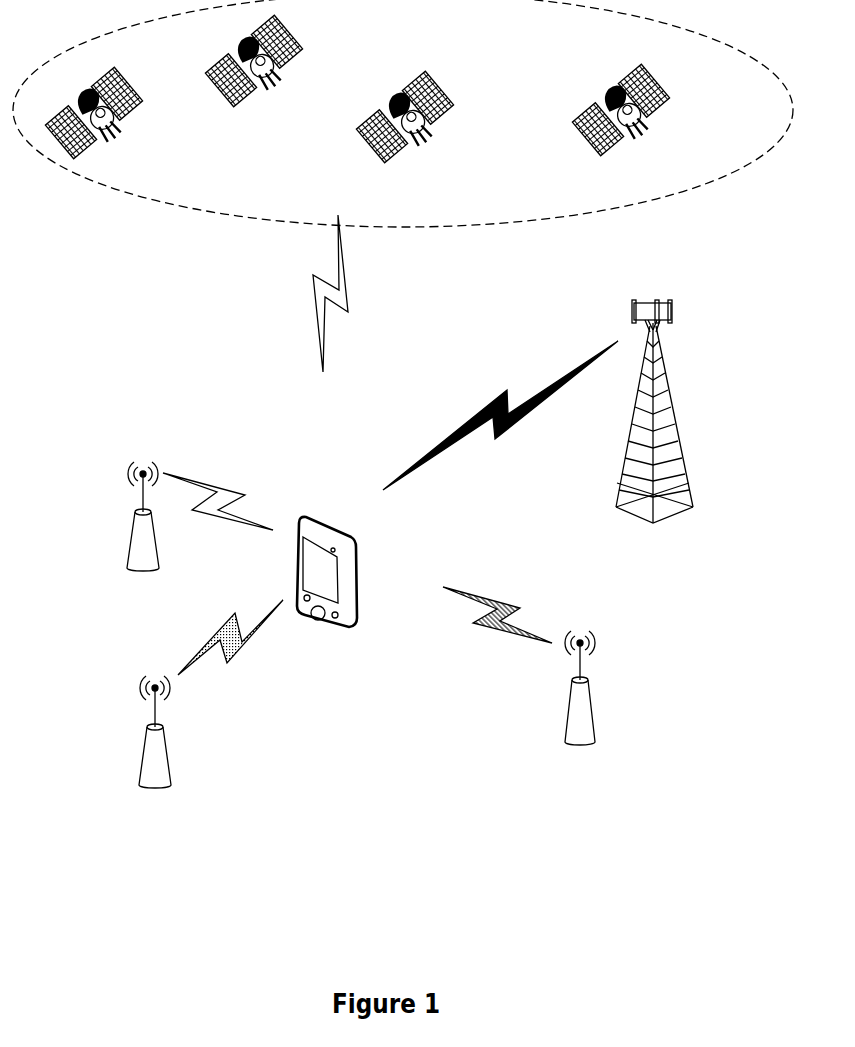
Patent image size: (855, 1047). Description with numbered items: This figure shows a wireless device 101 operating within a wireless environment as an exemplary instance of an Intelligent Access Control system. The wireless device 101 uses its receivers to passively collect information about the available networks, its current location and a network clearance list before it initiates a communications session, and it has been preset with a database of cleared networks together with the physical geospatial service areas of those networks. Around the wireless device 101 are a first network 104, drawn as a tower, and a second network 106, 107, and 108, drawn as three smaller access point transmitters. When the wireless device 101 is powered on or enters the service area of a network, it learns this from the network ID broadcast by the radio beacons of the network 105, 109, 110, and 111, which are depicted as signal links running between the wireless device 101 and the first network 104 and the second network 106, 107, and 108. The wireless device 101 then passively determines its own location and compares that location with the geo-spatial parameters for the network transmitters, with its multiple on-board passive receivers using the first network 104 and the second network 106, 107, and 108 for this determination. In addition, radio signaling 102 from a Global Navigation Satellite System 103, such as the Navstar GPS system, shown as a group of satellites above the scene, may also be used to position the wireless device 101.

The wireless device 101 is at (348, 572).
The radio signaling 102 is at (345, 293).
The Global Navigation Satellite System 103 is at (403, 113).
The first network 104 is at (675, 411).
The radio beacon of the network 105 is at (500, 415).
The second network 106 is at (146, 529).
The second network 107 is at (154, 745).
The second network 108 is at (576, 700).
The radio beacon of the network 109 is at (218, 496).
The radio beacon of the network 110 is at (230, 648).
The radio beacon of the network 111 is at (497, 610).